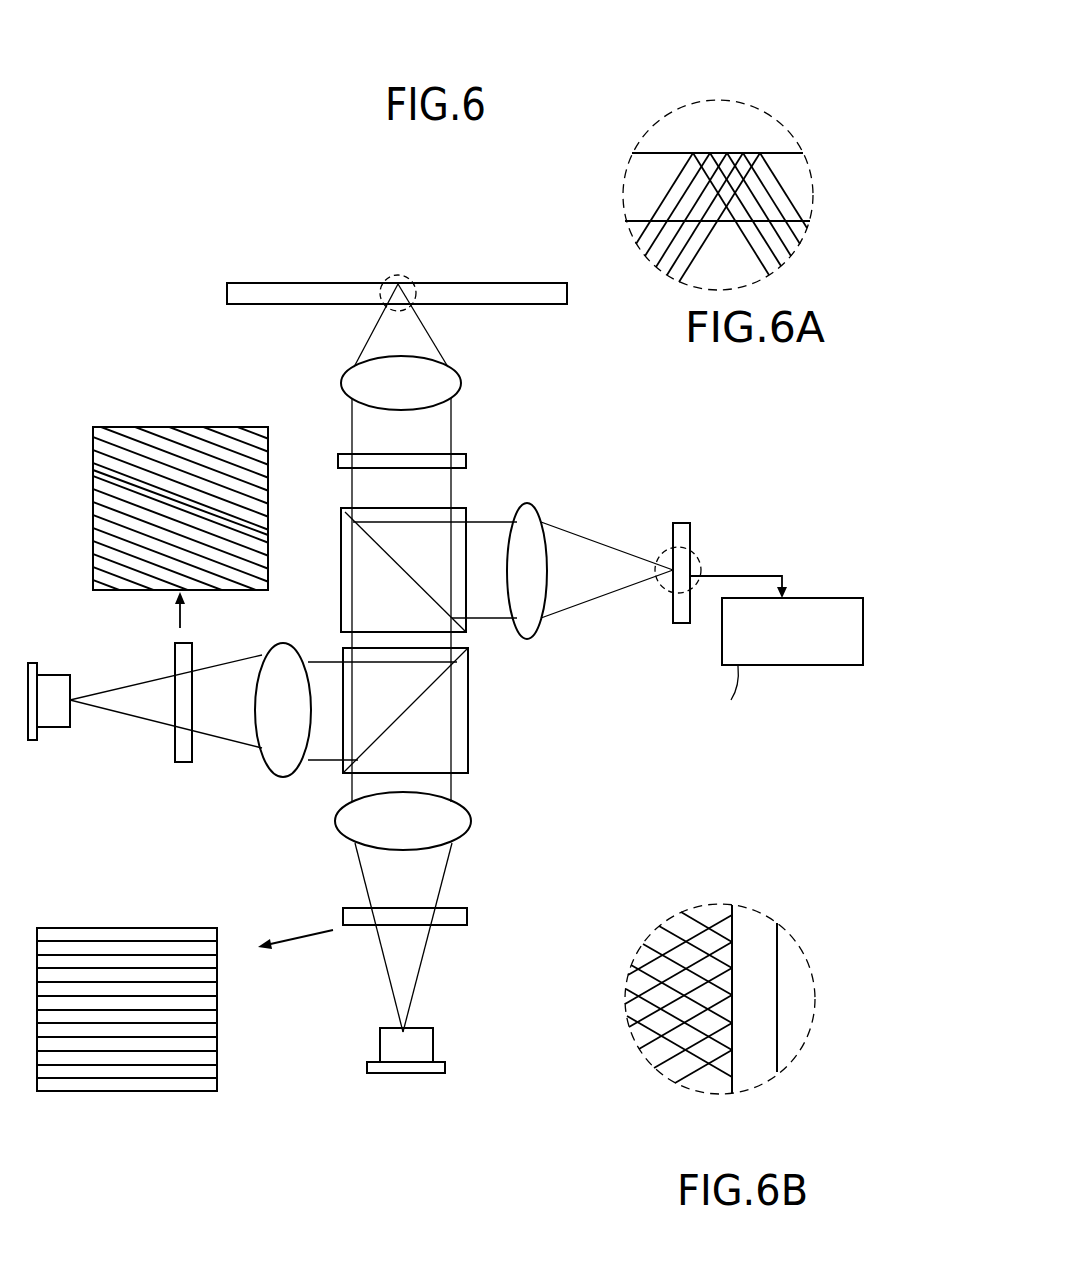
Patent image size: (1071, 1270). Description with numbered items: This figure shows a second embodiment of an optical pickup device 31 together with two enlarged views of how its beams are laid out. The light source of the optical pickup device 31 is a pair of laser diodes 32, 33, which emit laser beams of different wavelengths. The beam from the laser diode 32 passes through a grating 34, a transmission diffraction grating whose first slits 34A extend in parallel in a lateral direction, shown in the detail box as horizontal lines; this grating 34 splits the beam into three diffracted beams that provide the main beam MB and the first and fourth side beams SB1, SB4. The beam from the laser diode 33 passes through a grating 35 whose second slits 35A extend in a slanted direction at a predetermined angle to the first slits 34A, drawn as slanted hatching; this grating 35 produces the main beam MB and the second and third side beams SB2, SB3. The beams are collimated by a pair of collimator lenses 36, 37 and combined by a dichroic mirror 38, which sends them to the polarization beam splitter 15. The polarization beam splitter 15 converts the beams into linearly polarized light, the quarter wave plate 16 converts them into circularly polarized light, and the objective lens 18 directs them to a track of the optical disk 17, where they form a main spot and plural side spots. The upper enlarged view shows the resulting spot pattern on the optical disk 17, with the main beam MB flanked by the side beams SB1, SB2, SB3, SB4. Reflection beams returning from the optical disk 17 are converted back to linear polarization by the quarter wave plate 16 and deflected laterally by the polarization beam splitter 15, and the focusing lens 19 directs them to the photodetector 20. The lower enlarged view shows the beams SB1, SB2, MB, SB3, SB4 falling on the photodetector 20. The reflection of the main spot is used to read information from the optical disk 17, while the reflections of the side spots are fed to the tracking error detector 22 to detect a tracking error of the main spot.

In FIG. 6, the optical pickup device 31 is at (316, 170).
In FIG. 6, the optical disk 17 is at (331, 283).
In FIG. 6A, the optical disk 17 is at (660, 162).
In FIG. 6, the objective lens 18 is at (345, 378).
In FIG. 6, the quarter wave plate 16 is at (340, 458).
In FIG. 6, the polarization beam splitter 15 is at (343, 544).
In FIG. 6, the focusing lens 19 is at (531, 511).
In FIG. 6, the photodetector 20 is at (684, 531).
In FIG. 6B, the photodetector 20 is at (757, 1082).
In FIG. 6, the tracking error detector 22 is at (806, 598).
In FIG. 6, the dichroic mirror 38 is at (457, 690).
In FIG. 6, the collimator lens 37 is at (279, 760).
In FIG. 6, the collimator lens 36 is at (349, 827).
In FIG. 6, the grating 35 is at (185, 763).
In FIG. 6, the second slits 35A is at (125, 467).
In FIG. 6, the laser diode 33 is at (55, 722).
In FIG. 6, the grating 34 is at (450, 924).
In FIG. 6, the first slits 34A is at (197, 1020).
In FIG. 6, the laser diode 32 is at (428, 1047).
In FIG. 6A, the first side beam SB1 is at (697, 152).
In FIG. 6B, the first side beam SB1 is at (732, 930).
In FIG. 6A, the second side beam SB2 is at (713, 152).
In FIG. 6B, the second side beam SB2 is at (732, 960).
In FIG. 6A, the main beam MB is at (728, 152).
In FIG. 6B, the main beam MB is at (732, 990).
In FIG. 6A, the third side beam SB3 is at (747, 152).
In FIG. 6B, the third side beam SB3 is at (732, 1018).
In FIG. 6A, the fourth side beam SB4 is at (770, 152).
In FIG. 6B, the fourth side beam SB4 is at (732, 1067).